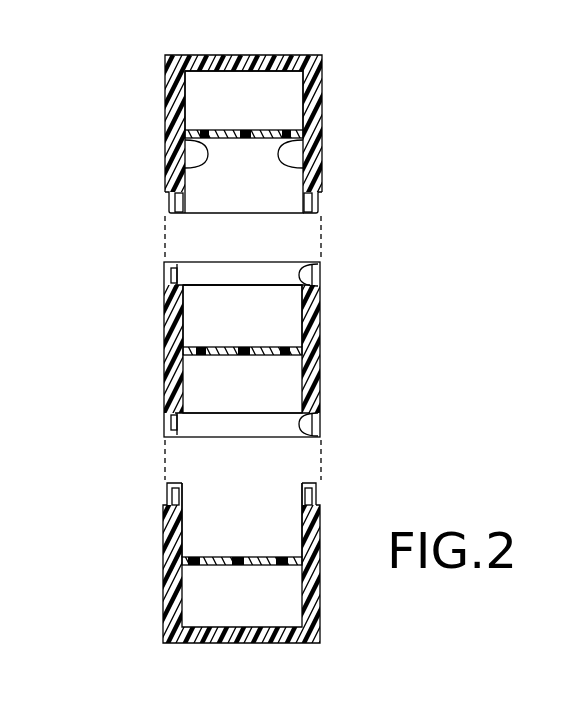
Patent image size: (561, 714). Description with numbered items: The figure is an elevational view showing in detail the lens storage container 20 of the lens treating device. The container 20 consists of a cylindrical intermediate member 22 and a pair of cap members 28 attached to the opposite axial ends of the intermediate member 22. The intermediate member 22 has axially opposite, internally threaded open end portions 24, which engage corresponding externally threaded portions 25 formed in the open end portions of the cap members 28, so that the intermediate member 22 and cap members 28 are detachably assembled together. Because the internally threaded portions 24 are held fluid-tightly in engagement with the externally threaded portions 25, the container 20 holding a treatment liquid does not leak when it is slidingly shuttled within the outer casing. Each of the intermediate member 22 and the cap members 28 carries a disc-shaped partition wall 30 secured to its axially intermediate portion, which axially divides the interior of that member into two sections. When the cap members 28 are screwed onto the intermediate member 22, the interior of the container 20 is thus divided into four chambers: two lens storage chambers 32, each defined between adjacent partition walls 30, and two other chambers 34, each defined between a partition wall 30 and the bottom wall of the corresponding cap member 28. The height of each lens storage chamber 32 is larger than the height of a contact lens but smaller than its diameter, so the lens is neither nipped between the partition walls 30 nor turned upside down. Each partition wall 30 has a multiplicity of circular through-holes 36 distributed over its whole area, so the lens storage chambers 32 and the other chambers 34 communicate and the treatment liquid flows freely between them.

The lens storage container 20 is at (88, 324).
The cylindrical intermediate member 22 is at (150, 363).
The internally threaded open end portion 24 is at (300, 270).
The externally threaded portion 25 is at (322, 200).
The cap member 28 is at (150, 122).
The partition wall 30 is at (284, 108).
The lens storage chamber 32 is at (195, 327).
The other chamber 34 is at (205, 85).
The circular through-hole 36 is at (243, 130).